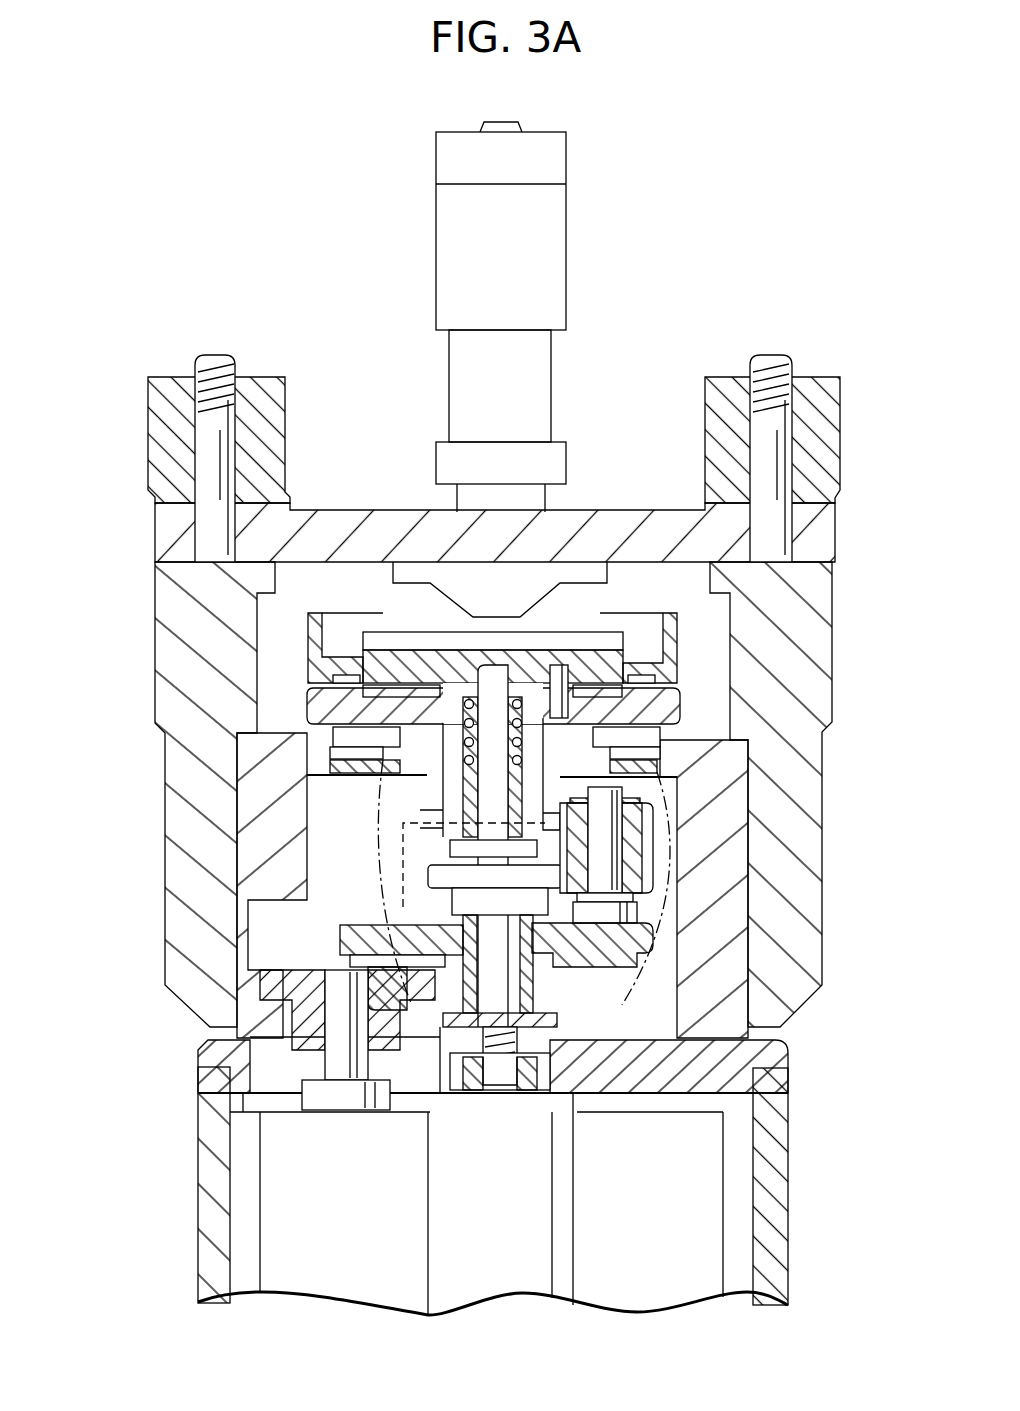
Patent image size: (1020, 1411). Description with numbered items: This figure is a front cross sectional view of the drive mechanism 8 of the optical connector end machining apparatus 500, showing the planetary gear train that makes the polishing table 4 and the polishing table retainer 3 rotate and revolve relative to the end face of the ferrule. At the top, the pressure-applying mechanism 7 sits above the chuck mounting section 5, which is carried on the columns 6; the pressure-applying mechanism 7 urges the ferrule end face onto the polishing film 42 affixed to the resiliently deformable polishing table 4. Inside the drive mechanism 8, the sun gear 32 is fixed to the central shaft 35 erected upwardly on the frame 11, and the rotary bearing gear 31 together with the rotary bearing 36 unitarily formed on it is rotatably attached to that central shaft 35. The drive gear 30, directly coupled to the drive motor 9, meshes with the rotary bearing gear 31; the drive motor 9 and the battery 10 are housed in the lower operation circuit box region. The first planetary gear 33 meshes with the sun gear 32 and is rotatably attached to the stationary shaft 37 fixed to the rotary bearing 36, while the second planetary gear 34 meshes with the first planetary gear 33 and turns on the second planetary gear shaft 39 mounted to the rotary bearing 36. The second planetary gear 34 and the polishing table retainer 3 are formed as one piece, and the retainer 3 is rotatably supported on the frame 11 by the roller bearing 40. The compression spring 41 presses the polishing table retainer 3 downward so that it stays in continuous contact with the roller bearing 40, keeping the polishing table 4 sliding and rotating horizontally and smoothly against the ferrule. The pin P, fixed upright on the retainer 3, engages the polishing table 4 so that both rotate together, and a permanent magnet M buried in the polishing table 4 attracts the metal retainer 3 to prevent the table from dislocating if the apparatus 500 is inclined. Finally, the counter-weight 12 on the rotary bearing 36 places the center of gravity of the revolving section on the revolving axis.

The optical connector end machining apparatus 500 is at (745, 142).
The pressure-applying mechanism 7 is at (578, 271).
The chuck mounting section 5 is at (150, 533).
The columns 6 is at (162, 598).
The frame 11 is at (735, 985).
The polishing film 42 is at (607, 642).
The polishing table 4 is at (600, 660).
The compression spring 41 is at (312, 702).
The polishing table retainer 3 is at (655, 715).
The pin P is at (551, 690).
The permanent magnet M is at (314, 666).
The second planetary gear shaft 39 is at (336, 748).
The roller bearing 40 is at (655, 732).
The second planetary gear 34 is at (445, 778).
The sun gear 32 is at (435, 878).
The stationary shaft 37 is at (600, 822).
The first planetary gear 33 is at (612, 847).
The central shaft 35 is at (405, 958).
The rotary bearing 36 is at (655, 940).
The counter-weight 12 is at (403, 907).
The drive mechanism 8 is at (360, 848).
The rotary bearing gear 31 is at (640, 1055).
The drive gear 30 is at (200, 1050).
The drive motor 9 is at (285, 1222).
The battery 10 is at (700, 1233).